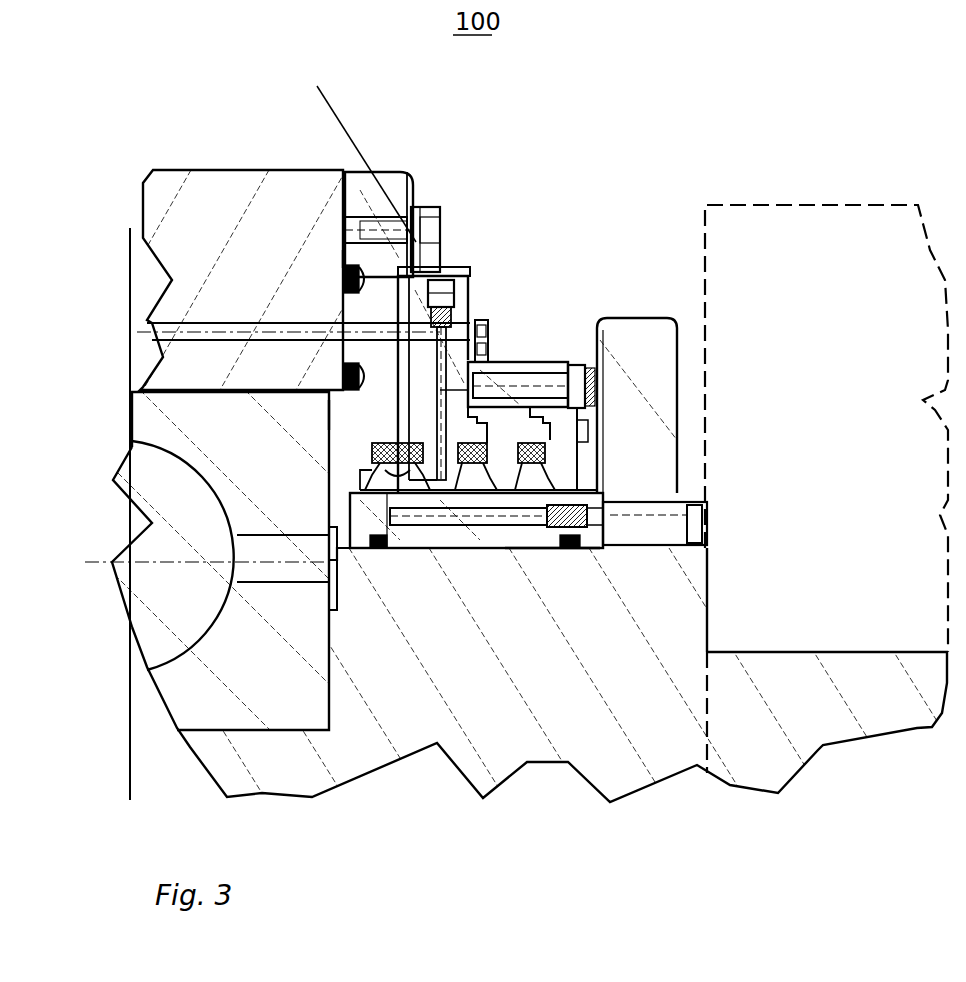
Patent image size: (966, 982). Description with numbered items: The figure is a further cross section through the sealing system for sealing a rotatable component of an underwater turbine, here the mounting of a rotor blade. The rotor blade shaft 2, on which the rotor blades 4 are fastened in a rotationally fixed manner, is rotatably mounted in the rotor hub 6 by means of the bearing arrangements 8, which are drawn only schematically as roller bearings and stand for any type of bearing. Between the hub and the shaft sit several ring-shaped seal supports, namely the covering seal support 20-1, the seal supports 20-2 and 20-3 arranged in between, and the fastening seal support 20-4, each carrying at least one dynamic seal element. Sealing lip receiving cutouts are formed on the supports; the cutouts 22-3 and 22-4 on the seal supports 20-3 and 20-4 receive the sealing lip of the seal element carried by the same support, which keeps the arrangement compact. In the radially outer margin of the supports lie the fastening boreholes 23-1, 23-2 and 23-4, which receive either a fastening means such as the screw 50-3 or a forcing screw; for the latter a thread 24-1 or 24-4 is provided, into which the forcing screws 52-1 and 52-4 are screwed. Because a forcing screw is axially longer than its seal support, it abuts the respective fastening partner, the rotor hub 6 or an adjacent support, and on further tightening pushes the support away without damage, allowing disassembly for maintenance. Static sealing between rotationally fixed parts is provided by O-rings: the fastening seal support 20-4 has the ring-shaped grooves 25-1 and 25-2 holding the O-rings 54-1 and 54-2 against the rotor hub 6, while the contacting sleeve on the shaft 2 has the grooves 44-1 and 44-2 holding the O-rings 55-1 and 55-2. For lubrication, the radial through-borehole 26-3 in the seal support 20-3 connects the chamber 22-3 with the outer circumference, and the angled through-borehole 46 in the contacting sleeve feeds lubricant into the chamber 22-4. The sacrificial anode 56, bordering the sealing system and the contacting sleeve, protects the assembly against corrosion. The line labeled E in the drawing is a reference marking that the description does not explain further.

The rotor blade shaft 2 is at (545, 735).
The rotor blade 4 is at (868, 237).
The rotor hub 6 is at (160, 200).
The bearing arrangement 8 is at (153, 422).
The covering seal support 20-1 is at (557, 370).
The seal support 20-2 is at (512, 372).
The seal support 20-3 is at (478, 330).
The fastening seal support 20-4 is at (400, 184).
The sealing lip receiving cutout 22-3 is at (462, 493).
The sealing lip receiving cutout 22-4 is at (445, 493).
The fastening borehole 23-1 is at (580, 547).
The fastening borehole 23-2 is at (520, 548).
The fastening borehole 23-4 is at (353, 217).
The thread 24-1 is at (531, 622).
The thread 24-4 is at (346, 213).
The ring-shaped groove 25-1 is at (343, 260).
The ring-shaped groove 25-2 is at (343, 418).
The radial through-borehole 26-3 is at (393, 375).
The groove 44-1 is at (563, 547).
The groove 44-2 is at (358, 547).
The angled through-borehole 46 is at (463, 661).
The screw 50-3 is at (455, 285).
The forcing screw 52-1 is at (580, 367).
The forcing screw 52-4 is at (432, 207).
The O-ring 54-1 is at (342, 283).
The O-ring 54-2 is at (343, 373).
The O-ring 55-1 is at (566, 548).
The O-ring 55-2 is at (388, 553).
The sacrificial anode 56 is at (643, 347).
The axis E is at (317, 86).